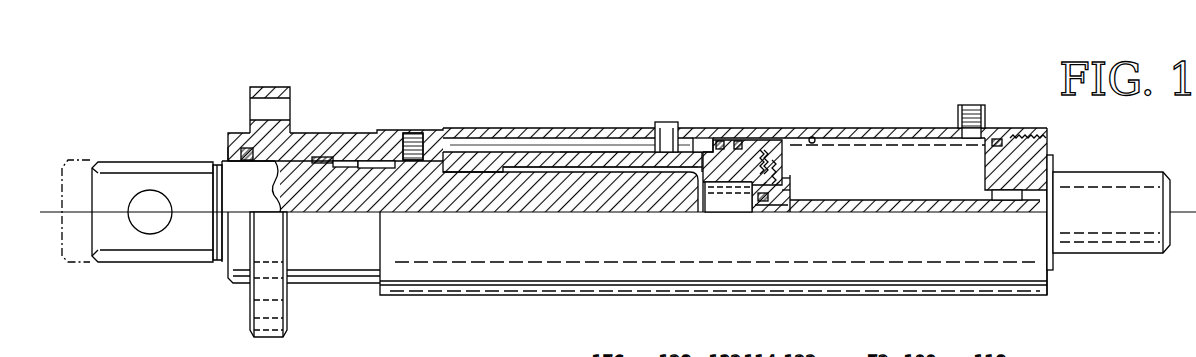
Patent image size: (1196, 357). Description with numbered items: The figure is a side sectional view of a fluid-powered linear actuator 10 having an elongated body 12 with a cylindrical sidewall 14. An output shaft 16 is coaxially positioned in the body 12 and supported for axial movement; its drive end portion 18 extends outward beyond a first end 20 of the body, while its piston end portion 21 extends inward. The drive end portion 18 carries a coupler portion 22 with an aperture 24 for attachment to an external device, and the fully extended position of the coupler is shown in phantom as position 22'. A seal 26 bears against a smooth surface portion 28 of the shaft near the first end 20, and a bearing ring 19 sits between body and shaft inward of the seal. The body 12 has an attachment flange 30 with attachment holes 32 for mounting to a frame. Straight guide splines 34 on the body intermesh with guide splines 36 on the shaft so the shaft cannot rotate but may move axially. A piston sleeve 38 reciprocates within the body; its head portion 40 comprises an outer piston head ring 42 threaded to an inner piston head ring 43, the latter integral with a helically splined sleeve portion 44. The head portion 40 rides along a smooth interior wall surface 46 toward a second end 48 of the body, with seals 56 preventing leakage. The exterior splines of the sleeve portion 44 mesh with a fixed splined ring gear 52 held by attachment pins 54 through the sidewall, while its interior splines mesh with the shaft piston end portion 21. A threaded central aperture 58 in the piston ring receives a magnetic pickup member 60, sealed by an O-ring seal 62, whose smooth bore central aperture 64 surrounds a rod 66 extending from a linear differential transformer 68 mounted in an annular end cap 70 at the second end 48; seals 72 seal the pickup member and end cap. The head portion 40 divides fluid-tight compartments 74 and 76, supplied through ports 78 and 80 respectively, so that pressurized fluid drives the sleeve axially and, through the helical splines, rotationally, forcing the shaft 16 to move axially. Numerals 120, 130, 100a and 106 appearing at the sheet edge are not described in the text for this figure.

The fluid-powered linear actuator 10 is at (752, 95).
The body 12 is at (545, 130).
The cylindrical sidewall 14 is at (573, 133).
The output shaft 16 is at (392, 200).
The drive end portion 18 is at (228, 178).
The bearing ring 19 is at (320, 157).
The first end 20 is at (228, 147).
The piston end portion 21 is at (617, 196).
The coupler portion 22 is at (152, 194).
The fully extended position of coupler portion 22' is at (54, 193).
The aperture 24 is at (152, 225).
The seal 26 is at (246, 148).
The smooth radially outward facing surface portion 28 is at (240, 203).
The attachment flange 30 is at (283, 87).
The attachment holes 32 is at (287, 107).
The guide splines 34 is at (347, 161).
The guide splines 36 is at (377, 161).
The piston sleeve 38 is at (597, 155).
The head portion 40 is at (783, 158).
The outer piston head ring 42 is at (768, 150).
The inner piston head ring 43 is at (783, 170).
The sleeve portion 44 is at (527, 160).
The smooth interior wall surface 46 is at (814, 137).
The second end 48 is at (1040, 150).
The splined ring gear 52 is at (688, 145).
The attachment pins 54 is at (657, 122).
The seals 56 is at (740, 140).
The threaded central aperture 58 is at (735, 190).
The magnetic pickup member 60 is at (790, 192).
The O-ring seal 62 is at (790, 180).
The smooth bore central aperture 64 is at (778, 200).
The rod 66 is at (950, 205).
The linear differential transformer 68 is at (1122, 172).
The end cap 70 is at (1035, 152).
The seals 72 is at (765, 200).
The fluid-tight compartment 74 is at (482, 145).
The fluid-tight compartment 76 is at (865, 145).
The port 78 is at (418, 133).
The port 80 is at (969, 115).
The component 120 is at (815, 340).
The component 130 is at (860, 340).
The component 100a is at (955, 340).
The component 106 is at (1030, 340).